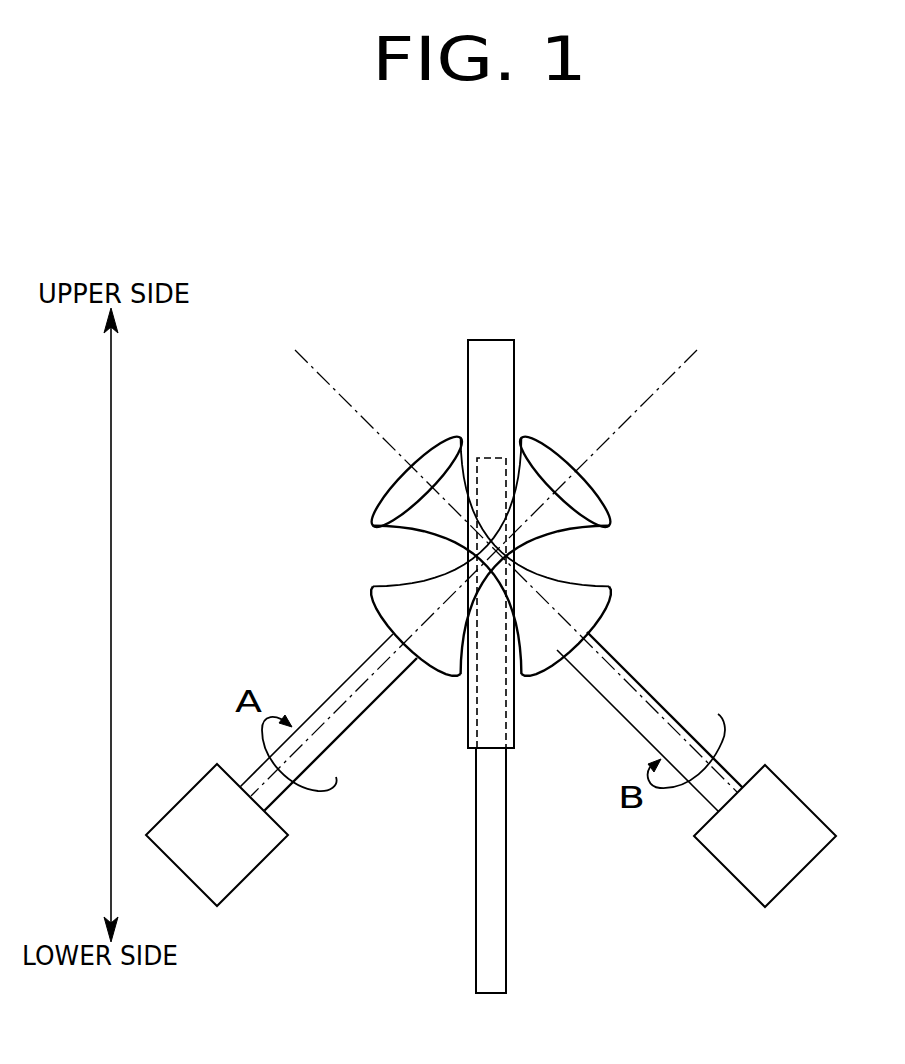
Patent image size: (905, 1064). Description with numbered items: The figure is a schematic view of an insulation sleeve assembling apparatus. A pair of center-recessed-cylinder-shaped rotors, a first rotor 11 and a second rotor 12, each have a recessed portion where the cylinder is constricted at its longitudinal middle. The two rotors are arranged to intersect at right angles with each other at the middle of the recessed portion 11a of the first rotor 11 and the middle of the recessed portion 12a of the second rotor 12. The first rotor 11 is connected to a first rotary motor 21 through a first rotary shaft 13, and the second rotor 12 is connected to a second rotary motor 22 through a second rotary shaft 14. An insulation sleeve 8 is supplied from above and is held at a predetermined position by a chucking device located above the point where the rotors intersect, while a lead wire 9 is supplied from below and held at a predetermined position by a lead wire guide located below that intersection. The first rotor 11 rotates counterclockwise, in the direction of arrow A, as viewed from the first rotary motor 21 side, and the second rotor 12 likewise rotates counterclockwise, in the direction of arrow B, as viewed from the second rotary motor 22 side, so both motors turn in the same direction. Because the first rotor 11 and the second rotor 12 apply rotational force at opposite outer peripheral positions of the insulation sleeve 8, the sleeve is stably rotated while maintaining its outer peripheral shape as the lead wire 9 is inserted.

The insulation sleeve 8 is at (492, 400).
The lead wire 9 is at (490, 830).
The first rotor 11 is at (590, 503).
The recessed portion 11a is at (547, 528).
The second rotor 12 is at (435, 457).
The recessed portion 12a is at (427, 530).
The first rotary shaft 13 is at (347, 683).
The second rotary shaft 14 is at (630, 680).
The first rotary motor 21 is at (205, 797).
The second rotary motor 22 is at (787, 807).